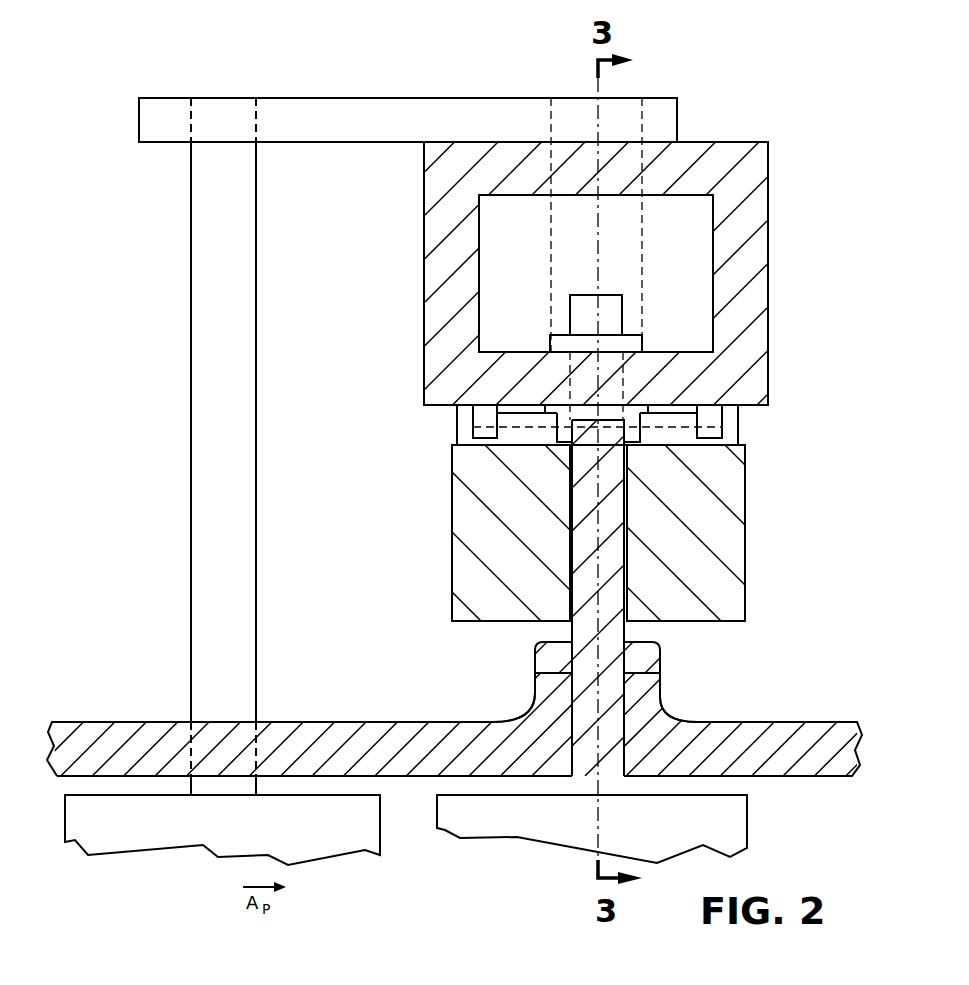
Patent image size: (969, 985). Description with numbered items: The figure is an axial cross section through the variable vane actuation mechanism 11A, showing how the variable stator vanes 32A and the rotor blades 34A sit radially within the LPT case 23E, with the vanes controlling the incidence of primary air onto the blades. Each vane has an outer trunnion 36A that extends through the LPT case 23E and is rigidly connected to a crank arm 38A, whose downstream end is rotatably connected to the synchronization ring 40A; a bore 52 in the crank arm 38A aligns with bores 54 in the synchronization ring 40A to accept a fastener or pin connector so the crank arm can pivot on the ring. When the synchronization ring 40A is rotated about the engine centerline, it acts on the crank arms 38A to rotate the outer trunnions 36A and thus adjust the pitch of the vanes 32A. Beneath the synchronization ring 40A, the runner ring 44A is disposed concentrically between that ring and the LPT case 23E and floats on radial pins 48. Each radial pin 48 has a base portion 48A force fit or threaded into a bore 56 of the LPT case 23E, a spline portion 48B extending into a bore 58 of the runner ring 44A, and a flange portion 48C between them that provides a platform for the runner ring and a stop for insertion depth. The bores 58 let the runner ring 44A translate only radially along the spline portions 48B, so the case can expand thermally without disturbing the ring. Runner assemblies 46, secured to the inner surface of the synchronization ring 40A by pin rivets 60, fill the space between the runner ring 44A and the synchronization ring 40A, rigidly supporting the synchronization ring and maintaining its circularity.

The variable vane actuation mechanism 11A is at (807, 118).
The LPT case 23E is at (841, 733).
The variable stator vanes 32A is at (317, 837).
The rotor blades 34A is at (670, 837).
The outer trunnions 36A is at (211, 473).
The crank arms 38A is at (384, 116).
The synchronization ring 40A is at (743, 151).
The runner ring 44A is at (723, 491).
The runner assemblies 46 is at (733, 421).
The radial pins 48 is at (668, 659).
The base portions 48A is at (584, 708).
The spline portions 48B is at (606, 631).
The flange portions 48C is at (544, 666).
The bore 52 is at (551, 117).
The bores 54 is at (643, 158).
The bores 56 is at (622, 722).
The bores 58 is at (568, 574).
The pin rivets 60 is at (636, 436).